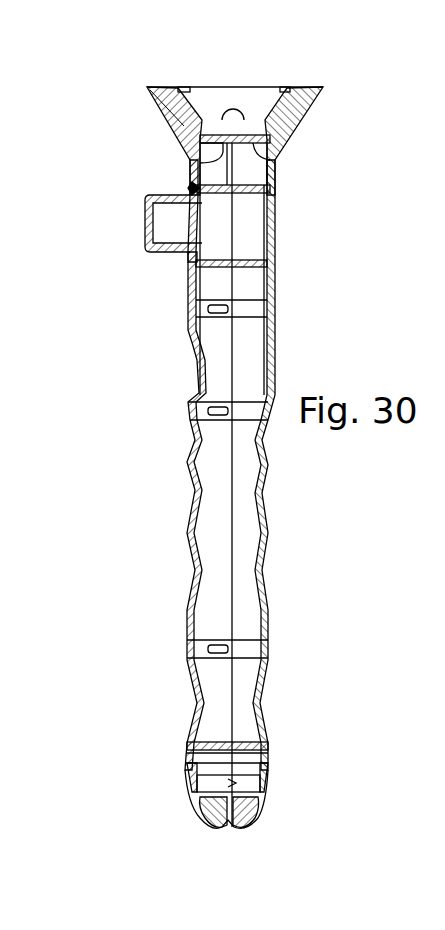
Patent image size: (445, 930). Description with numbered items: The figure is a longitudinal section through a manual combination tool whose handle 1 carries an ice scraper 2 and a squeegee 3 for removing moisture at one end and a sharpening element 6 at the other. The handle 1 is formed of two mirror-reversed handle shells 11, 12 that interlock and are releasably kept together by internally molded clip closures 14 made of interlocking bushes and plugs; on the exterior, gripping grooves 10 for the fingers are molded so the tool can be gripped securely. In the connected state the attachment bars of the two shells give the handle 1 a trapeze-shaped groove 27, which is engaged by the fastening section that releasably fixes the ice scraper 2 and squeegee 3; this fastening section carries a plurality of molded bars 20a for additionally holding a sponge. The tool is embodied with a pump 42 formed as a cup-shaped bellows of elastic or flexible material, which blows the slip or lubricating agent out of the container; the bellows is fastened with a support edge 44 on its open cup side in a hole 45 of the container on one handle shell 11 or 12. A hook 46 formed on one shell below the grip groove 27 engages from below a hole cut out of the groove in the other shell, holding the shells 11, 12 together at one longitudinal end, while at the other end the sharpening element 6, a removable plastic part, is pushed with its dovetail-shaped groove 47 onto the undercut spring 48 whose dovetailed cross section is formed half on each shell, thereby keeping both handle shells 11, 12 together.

The handle 1 is at (240, 538).
The ice scraper 2 is at (323, 87).
The squeegee 3 is at (147, 87).
The sharpening element 6 is at (203, 824).
The gripping grooves 10 is at (190, 500).
The handle shell 11 is at (274, 340).
The handle shell 12 is at (188, 318).
The clip closures 14 is at (247, 407).
The molded bars 20a is at (190, 92).
The trapeze-shaped groove 27 is at (275, 167).
The pump 42 is at (145, 230).
The support edge 44 is at (187, 254).
The hole 45 is at (190, 187).
The hook 46 is at (190, 163).
The dovetail-shaped groove 47 is at (205, 800).
The spring 48 is at (253, 817).